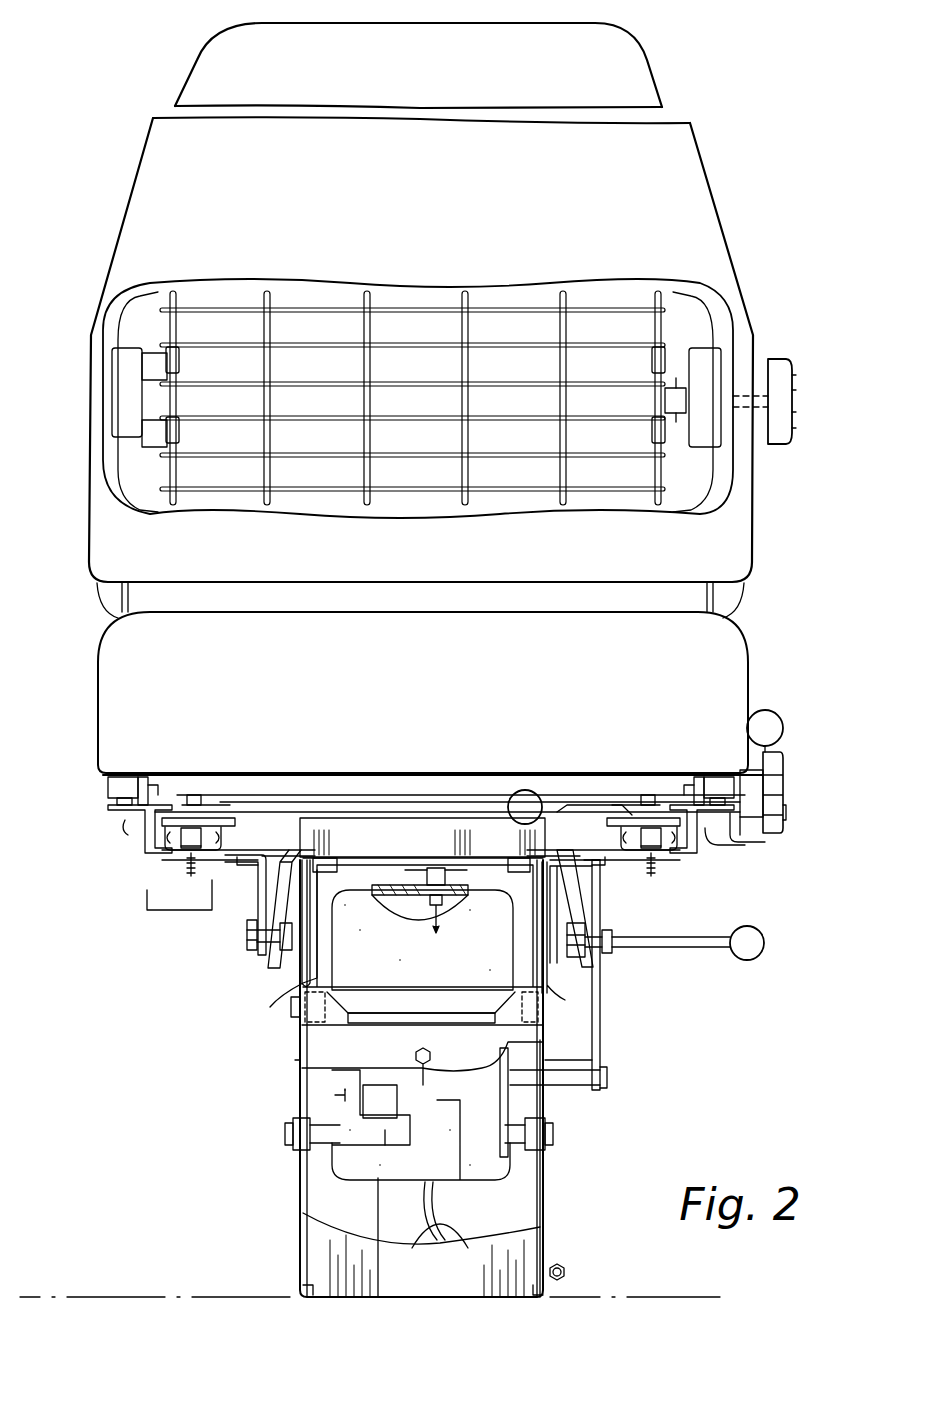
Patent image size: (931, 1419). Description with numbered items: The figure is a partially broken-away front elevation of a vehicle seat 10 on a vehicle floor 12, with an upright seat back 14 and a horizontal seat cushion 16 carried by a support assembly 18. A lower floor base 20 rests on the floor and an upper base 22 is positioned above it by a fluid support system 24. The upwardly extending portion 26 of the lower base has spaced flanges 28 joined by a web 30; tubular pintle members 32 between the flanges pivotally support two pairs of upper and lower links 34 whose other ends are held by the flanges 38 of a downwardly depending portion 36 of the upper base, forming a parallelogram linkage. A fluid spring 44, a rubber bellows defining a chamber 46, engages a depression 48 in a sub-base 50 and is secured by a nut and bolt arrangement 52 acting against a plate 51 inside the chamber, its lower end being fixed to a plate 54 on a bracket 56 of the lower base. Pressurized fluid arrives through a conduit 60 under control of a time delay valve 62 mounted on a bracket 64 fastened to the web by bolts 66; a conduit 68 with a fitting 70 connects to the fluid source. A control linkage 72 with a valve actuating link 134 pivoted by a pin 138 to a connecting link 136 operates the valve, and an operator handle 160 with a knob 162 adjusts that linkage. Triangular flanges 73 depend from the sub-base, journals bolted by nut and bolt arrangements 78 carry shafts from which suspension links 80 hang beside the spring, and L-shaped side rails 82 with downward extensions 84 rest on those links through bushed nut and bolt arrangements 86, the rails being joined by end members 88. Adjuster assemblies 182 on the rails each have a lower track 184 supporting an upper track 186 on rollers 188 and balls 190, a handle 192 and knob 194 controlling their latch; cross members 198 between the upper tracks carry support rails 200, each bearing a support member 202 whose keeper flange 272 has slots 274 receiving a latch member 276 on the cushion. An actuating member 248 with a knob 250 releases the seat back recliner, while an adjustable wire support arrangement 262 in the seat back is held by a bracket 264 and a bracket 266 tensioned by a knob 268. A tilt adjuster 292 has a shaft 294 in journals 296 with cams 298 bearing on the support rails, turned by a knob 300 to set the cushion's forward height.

The vehicle seat 10 is at (752, 127).
The vehicle floor 12 is at (215, 1297).
The seat back 14 is at (713, 197).
The seat cushion 16 is at (748, 640).
The support assembly 18 is at (230, 1040).
The lower floor base 20 is at (557, 1250).
The upper base 22 is at (163, 903).
The fluid support system 24 is at (512, 1178).
The upwardly extending portion 26 is at (303, 1050).
The flanges 28 is at (303, 1080).
The web 30 is at (367, 1025).
The tubular pintle members 32 is at (433, 1008).
The upper and lower links 34 is at (333, 1148).
The downwardly depending portion 36 is at (302, 960).
The flanges 38 is at (300, 982).
The fluid spring 44 is at (300, 995).
The chamber 46 is at (453, 905).
The depression 48 is at (460, 890).
The sub-base 50 is at (390, 855).
The plate 51 is at (420, 910).
The nut and bolt arrangement 52 is at (434, 908).
The plate 54 is at (378, 1180).
The bracket 56 is at (407, 1218).
The conduit 60 is at (434, 1244).
The time delay valve 62 is at (498, 1068).
The bracket 64 is at (395, 1066).
The bolts 66 is at (423, 1066).
The conduit 68 is at (448, 1222).
The fitting 70 is at (566, 1273).
The control linkage 72 is at (548, 1080).
The triangular flanges 73 is at (308, 933).
The nut and bolt arrangements 78 is at (328, 858).
The suspension links 80 is at (262, 865).
The side rails 82 is at (225, 852).
The downward extensions 84 is at (262, 920).
The bushed nut and bolt arrangements 86 is at (248, 940).
The end members 88 is at (392, 812).
The valve actuating link 134 is at (560, 1092).
The connecting link 136 is at (600, 1033).
The pin 138 is at (606, 1080).
The operator handle 160 is at (720, 950).
The knob 162 is at (765, 942).
The adjuster assemblies 182 is at (225, 830).
The lower track 184 is at (215, 853).
The upper track 186 is at (205, 818).
The rollers 188 is at (258, 913).
The balls 190 is at (205, 882).
The handle 192 is at (548, 803).
The knob 194 is at (525, 805).
The cross members 198 is at (320, 810).
The support rails 200 is at (150, 800).
The support member 202 is at (160, 840).
The actuating member 248 is at (760, 842).
The knob 250 is at (767, 715).
The adjustable wire support arrangement 262 is at (422, 300).
The bracket 264 is at (158, 345).
The bracket 266 is at (692, 380).
The knob 268 is at (790, 365).
The keeper flange 272 is at (108, 808).
The slots or openings 274 is at (762, 795).
The latch member 276 is at (125, 822).
The tilt adjuster 292 is at (786, 755).
The shaft 294 is at (440, 802).
The journals 296 is at (108, 788).
The cams 298 is at (185, 800).
The knob 300 is at (785, 812).